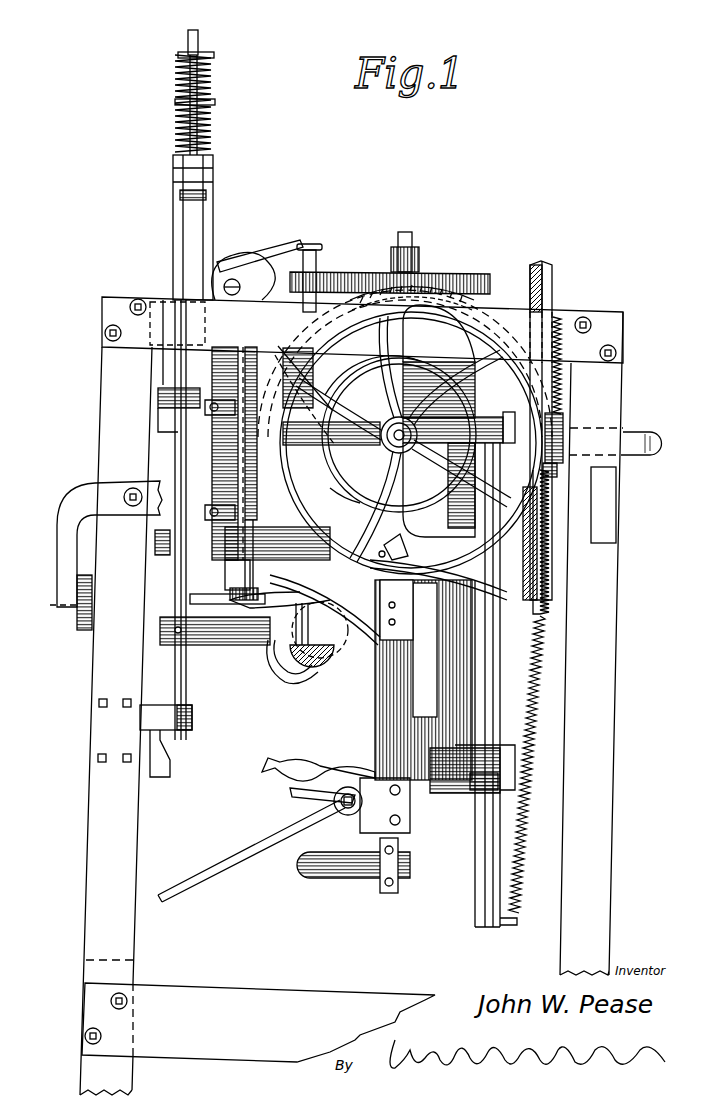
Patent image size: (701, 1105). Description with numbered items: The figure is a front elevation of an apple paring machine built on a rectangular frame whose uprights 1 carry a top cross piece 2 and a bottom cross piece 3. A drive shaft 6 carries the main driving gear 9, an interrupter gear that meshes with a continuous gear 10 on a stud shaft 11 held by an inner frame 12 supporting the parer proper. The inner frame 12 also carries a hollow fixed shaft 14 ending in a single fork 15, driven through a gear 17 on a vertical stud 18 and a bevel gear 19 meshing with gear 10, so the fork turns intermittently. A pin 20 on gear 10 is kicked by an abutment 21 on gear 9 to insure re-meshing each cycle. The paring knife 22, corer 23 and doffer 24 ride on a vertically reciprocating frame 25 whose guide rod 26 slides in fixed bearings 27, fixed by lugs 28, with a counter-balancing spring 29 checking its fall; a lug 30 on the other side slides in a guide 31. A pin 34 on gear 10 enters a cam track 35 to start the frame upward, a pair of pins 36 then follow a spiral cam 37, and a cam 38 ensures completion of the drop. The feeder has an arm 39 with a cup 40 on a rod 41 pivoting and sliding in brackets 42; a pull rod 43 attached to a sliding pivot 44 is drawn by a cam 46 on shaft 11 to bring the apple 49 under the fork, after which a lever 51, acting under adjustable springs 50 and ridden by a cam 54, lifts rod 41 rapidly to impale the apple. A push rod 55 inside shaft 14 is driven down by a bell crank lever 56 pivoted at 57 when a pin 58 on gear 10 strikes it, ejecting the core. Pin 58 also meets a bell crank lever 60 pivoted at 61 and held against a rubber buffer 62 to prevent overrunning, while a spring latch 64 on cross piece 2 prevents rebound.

The uprights 1 is at (600, 724).
The cross piece 2 is at (500, 312).
The cross piece 3 is at (236, 993).
The drive shaft 6 is at (642, 438).
The main driving gear 9 is at (553, 278).
The gear 10 is at (448, 291).
The shaft 11 is at (398, 456).
The inner frame 12 is at (465, 418).
The fixed shaft 14 is at (305, 481).
The fork 15 is at (310, 634).
The gear 17 is at (423, 300).
The vertical stud 18 is at (414, 242).
The bevel gear 19 is at (448, 322).
The pin 20 is at (552, 478).
The projecting abutment 21 is at (558, 481).
The paring knife 22 is at (295, 766).
The corer 23 is at (358, 878).
The doffer 24 is at (235, 855).
The vertically reciprocating frame 25 is at (395, 673).
The guide rod 26 is at (497, 657).
The fixed bearings 27 is at (560, 432).
The lugs 28 is at (503, 723).
The counter-balancing spring 29 is at (525, 836).
The lug 30 is at (230, 563).
The guide 31 is at (160, 395).
The pin 34 is at (384, 548).
The cam track 35 is at (368, 602).
The pins 36 is at (402, 614).
The spiral cam 37 is at (356, 366).
The cam 38 is at (310, 534).
The arm 39 is at (235, 648).
The cup 40 is at (290, 682).
The rod 41 is at (178, 676).
The brackets 42 is at (177, 741).
The pull rod 43 is at (235, 598).
The sliding pivot 44 is at (253, 548).
The cam 46 is at (250, 284).
The apple 49 is at (336, 651).
The adjustable springs 50 is at (205, 120).
The lever 51 is at (215, 173).
The cam 54 is at (175, 363).
The push rod 55 is at (318, 258).
The bell crank lever 56 is at (282, 246).
The pivot 57 is at (230, 282).
The pin 58 is at (397, 435).
The bell crank lever 60 is at (95, 512).
The pivot 61 is at (126, 492).
The rubber buffer 62 is at (78, 625).
The spring latch 64 is at (300, 358).